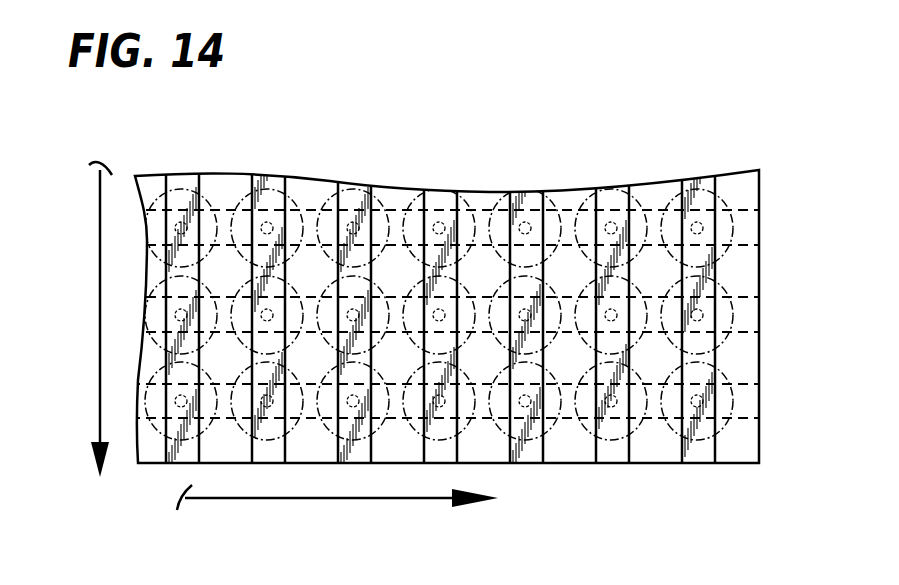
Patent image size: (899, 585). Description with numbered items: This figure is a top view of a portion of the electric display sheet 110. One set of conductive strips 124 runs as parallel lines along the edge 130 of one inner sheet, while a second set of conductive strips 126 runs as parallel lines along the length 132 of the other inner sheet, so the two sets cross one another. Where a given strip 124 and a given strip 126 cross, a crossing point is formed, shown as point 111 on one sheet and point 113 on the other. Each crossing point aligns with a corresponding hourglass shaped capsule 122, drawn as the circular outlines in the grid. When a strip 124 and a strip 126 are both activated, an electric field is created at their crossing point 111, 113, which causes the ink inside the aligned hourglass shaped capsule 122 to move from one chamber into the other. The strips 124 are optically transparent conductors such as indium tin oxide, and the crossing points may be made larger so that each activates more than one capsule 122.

The electric display sheet 110 is at (543, 152).
The crossing point 111 is at (705, 216).
The crossing point 113 is at (705, 216).
The hourglass shaped capsule 122 is at (738, 342).
The conductive strip 124 is at (622, 190).
The conductive strip 126 is at (788, 294).
The edge 130 is at (100, 275).
The length 132 is at (288, 500).